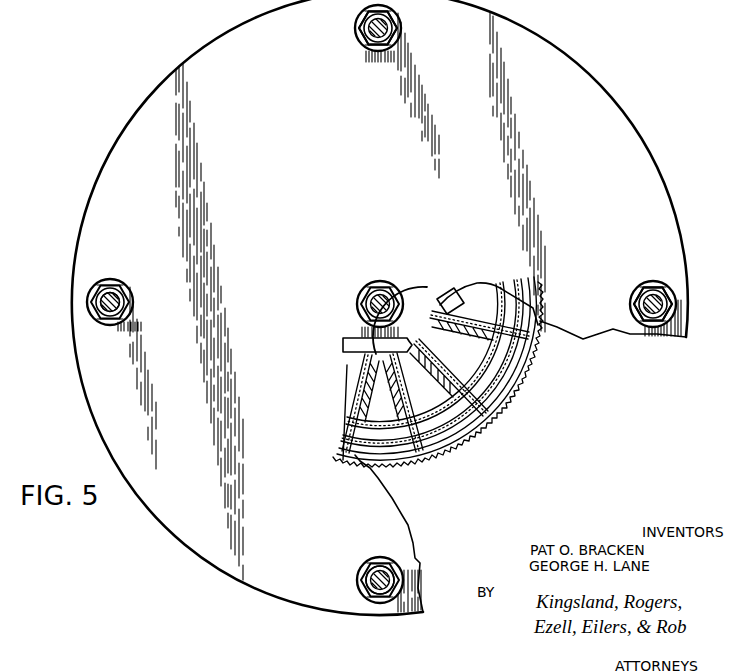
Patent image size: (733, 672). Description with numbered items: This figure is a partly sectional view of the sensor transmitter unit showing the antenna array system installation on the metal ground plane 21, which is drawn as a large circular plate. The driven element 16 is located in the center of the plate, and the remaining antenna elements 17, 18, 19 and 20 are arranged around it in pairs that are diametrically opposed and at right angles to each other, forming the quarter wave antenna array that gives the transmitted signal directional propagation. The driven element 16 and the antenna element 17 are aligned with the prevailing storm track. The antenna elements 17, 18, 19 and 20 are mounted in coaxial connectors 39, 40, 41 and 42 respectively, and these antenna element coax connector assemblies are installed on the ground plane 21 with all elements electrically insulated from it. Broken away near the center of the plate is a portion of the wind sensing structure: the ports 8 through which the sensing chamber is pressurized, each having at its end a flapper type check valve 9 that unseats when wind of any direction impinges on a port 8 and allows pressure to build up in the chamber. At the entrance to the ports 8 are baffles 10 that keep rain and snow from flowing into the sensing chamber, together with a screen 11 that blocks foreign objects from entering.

The ports 8 is at (388, 461).
The flapper type check valve 9 is at (452, 294).
The baffles 10 is at (467, 440).
The screen 11 is at (517, 392).
The driven element 16 is at (382, 296).
The antenna element 17 is at (365, 33).
The antenna element 18 is at (670, 302).
The antenna element 19 is at (413, 570).
The antenna element 20 is at (107, 311).
The ground plane 21 is at (566, 67).
The coaxial connector 39 is at (402, 43).
The coaxial connector 40 is at (660, 282).
The coaxial connector 41 is at (372, 595).
The coaxial connector 42 is at (88, 292).